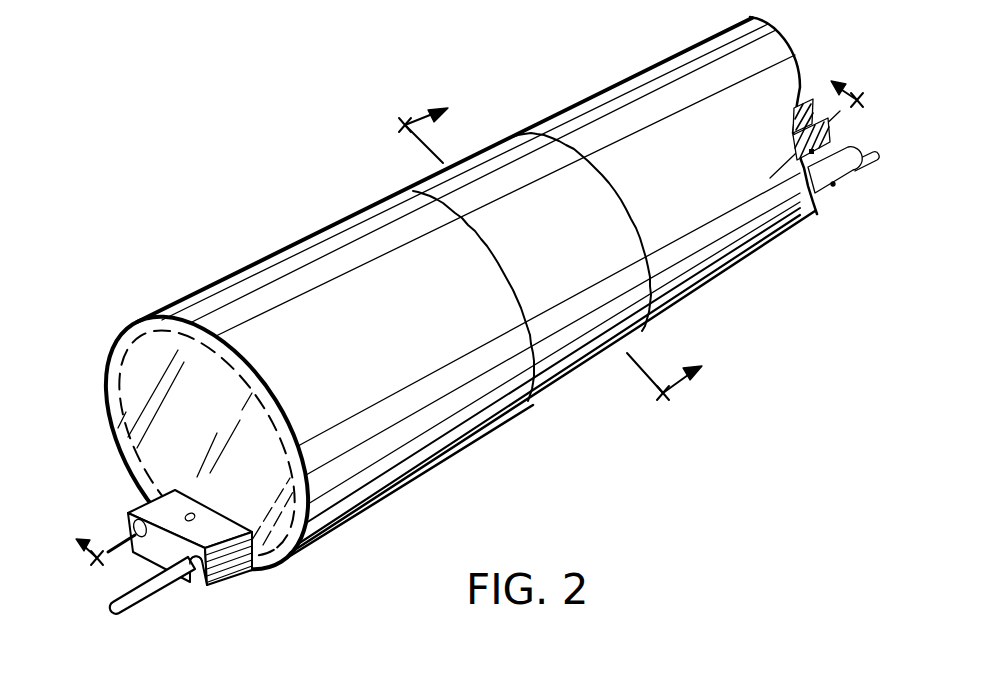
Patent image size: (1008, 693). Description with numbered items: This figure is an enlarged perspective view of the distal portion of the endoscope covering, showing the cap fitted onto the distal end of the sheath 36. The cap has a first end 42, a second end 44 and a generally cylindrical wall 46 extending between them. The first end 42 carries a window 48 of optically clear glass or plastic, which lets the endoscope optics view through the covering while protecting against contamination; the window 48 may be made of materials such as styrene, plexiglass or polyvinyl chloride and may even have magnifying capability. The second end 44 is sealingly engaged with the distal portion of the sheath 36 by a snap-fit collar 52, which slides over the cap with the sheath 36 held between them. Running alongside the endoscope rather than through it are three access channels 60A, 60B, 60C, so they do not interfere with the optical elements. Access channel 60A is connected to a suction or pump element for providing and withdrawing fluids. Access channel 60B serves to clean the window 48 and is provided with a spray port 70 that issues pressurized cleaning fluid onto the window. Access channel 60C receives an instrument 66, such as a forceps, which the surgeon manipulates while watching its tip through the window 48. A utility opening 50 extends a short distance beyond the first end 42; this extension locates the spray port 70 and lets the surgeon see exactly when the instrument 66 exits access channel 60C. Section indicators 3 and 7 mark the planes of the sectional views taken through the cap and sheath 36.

The sheath 36 is at (630, 98).
The first end 42 is at (101, 359).
The second end 44 is at (541, 396).
The generally cylindrical wall 46 is at (293, 250).
The window 48 is at (168, 368).
The utility opening 50 is at (247, 577).
The snap-fit collar 52 is at (568, 254).
The access channel 60A is at (135, 532).
The access channel 60B is at (830, 152).
The access channel 60C is at (836, 192).
The instrument 66 is at (147, 600).
The spray port 70 is at (191, 513).
The section line 3- 3 is at (460, 310).
The section line 7- 7 is at (563, 244).